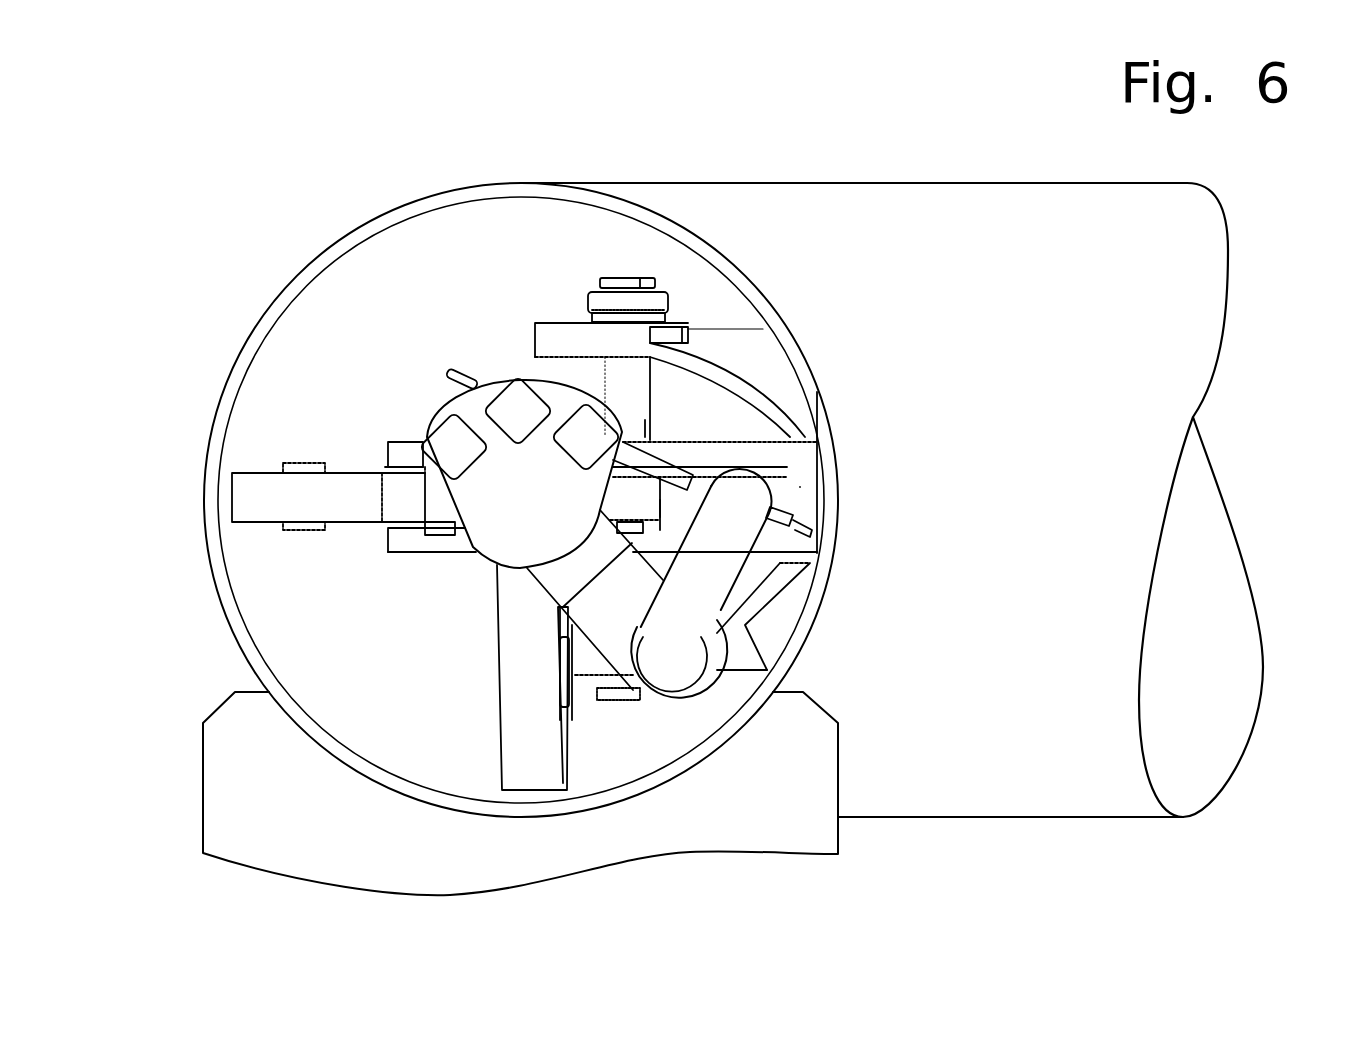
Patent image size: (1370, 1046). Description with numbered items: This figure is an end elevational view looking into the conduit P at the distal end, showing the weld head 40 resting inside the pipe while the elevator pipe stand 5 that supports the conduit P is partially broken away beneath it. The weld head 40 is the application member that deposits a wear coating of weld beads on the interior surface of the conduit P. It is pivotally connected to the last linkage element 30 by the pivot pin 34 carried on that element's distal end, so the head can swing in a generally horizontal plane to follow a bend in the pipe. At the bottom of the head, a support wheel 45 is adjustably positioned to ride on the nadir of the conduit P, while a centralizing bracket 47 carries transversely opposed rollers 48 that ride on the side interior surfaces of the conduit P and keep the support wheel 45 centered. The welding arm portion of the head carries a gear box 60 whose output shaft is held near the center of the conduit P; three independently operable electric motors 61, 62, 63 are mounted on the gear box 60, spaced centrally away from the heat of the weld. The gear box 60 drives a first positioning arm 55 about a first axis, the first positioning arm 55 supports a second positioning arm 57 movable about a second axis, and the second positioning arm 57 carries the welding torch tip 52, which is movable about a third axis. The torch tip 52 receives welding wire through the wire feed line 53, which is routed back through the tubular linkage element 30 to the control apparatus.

The weld head 40 is at (408, 146).
The conduit P is at (1195, 410).
The elevator pipe stand 5 is at (800, 757).
The linkage element 30 is at (747, 358).
The pivot pin 34 is at (640, 278).
The rollers 48 is at (285, 495).
The centralizing bracket 47 is at (397, 488).
The gear box 60 is at (517, 548).
The first positioning arm 55 is at (605, 625).
The electric motor 63 is at (442, 442).
The electric motor 62 is at (512, 393).
The electric motor 61 is at (577, 430).
The wire feed line 53 is at (447, 380).
The second positioning arm 57 is at (715, 563).
The welding torch tip 52 is at (787, 518).
The support wheel 45 is at (523, 750).